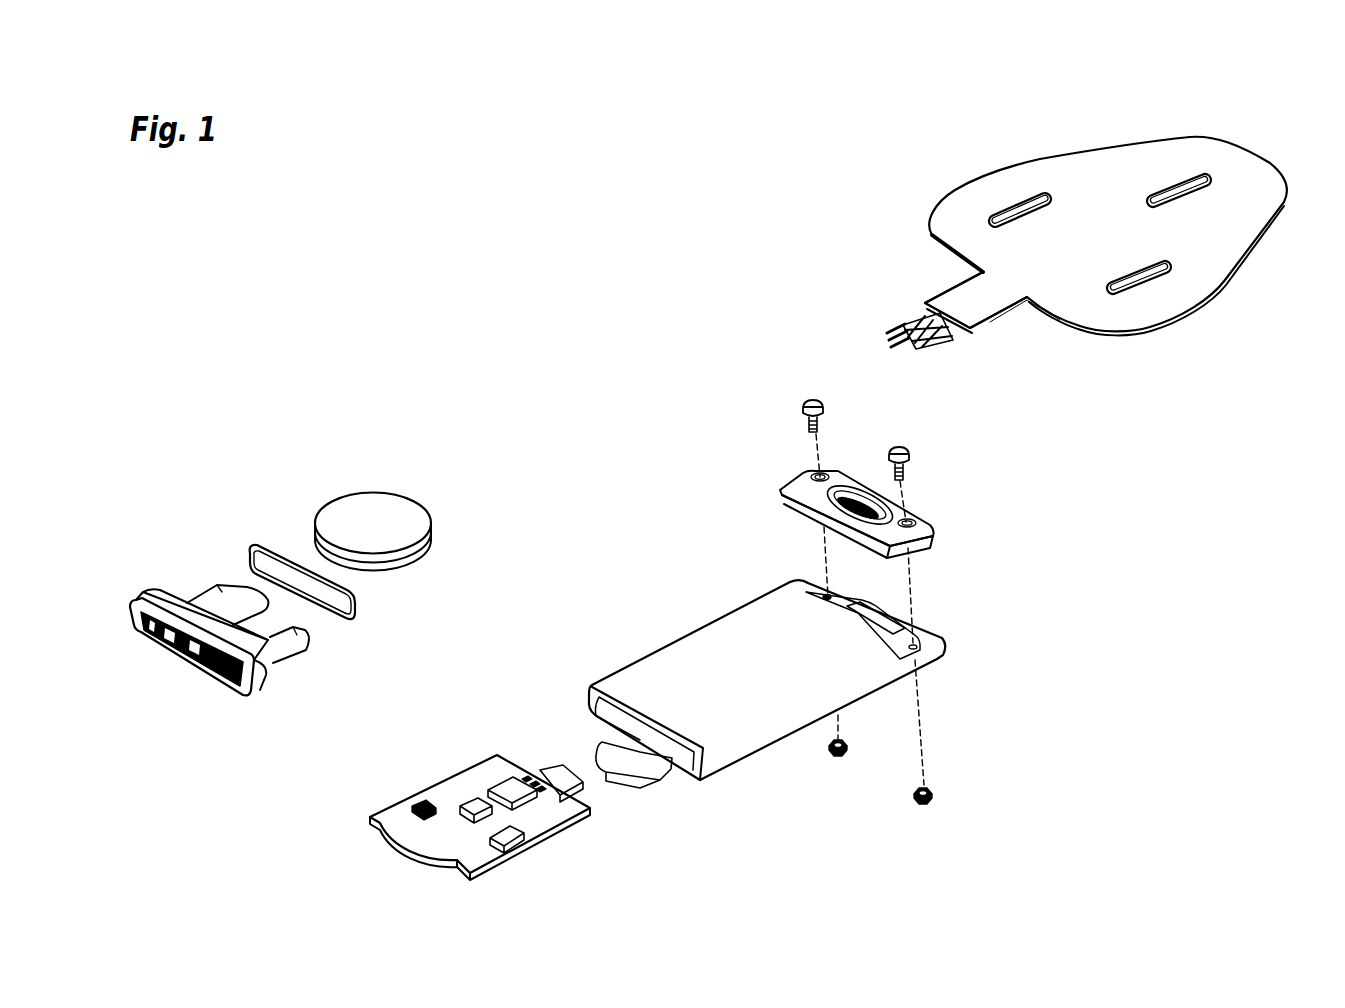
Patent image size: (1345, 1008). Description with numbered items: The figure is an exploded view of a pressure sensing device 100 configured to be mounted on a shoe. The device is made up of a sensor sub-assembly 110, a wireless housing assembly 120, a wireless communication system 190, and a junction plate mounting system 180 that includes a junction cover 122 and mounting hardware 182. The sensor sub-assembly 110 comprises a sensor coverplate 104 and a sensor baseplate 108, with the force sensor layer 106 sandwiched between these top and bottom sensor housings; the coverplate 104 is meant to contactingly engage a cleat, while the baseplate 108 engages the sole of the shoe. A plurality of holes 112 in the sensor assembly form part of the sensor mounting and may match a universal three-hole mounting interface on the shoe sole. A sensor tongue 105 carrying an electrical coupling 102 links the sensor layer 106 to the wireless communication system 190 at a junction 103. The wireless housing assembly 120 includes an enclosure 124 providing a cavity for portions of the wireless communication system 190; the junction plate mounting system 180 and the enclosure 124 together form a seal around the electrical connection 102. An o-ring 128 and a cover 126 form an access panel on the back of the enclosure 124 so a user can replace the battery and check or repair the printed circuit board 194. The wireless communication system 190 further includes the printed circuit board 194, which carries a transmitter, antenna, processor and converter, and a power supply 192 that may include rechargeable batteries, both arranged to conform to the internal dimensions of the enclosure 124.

The pressure sensing device 100 is at (611, 296).
The electrical coupling 102 is at (897, 330).
The junction 103 is at (550, 762).
The sensor coverplate 104 is at (1103, 184).
The sensor tongue 105 is at (957, 300).
The force sensor layer 106 is at (1015, 308).
The sensor baseplate 108 is at (1067, 327).
The sensor sub-assembly 110 is at (1251, 130).
The holes 112 is at (1134, 264).
The wireless housing assembly 120 is at (680, 566).
The junction cover 122 is at (912, 520).
The enclosure 124 is at (748, 742).
The cover 126 is at (152, 598).
The o-ring 128 is at (255, 542).
The junction plate mounting system 180 is at (828, 384).
The mounting hardware 182 is at (812, 397).
The wireless communication system 190 is at (429, 772).
The power supply 192 is at (373, 512).
The printed circuit board 194 is at (480, 857).